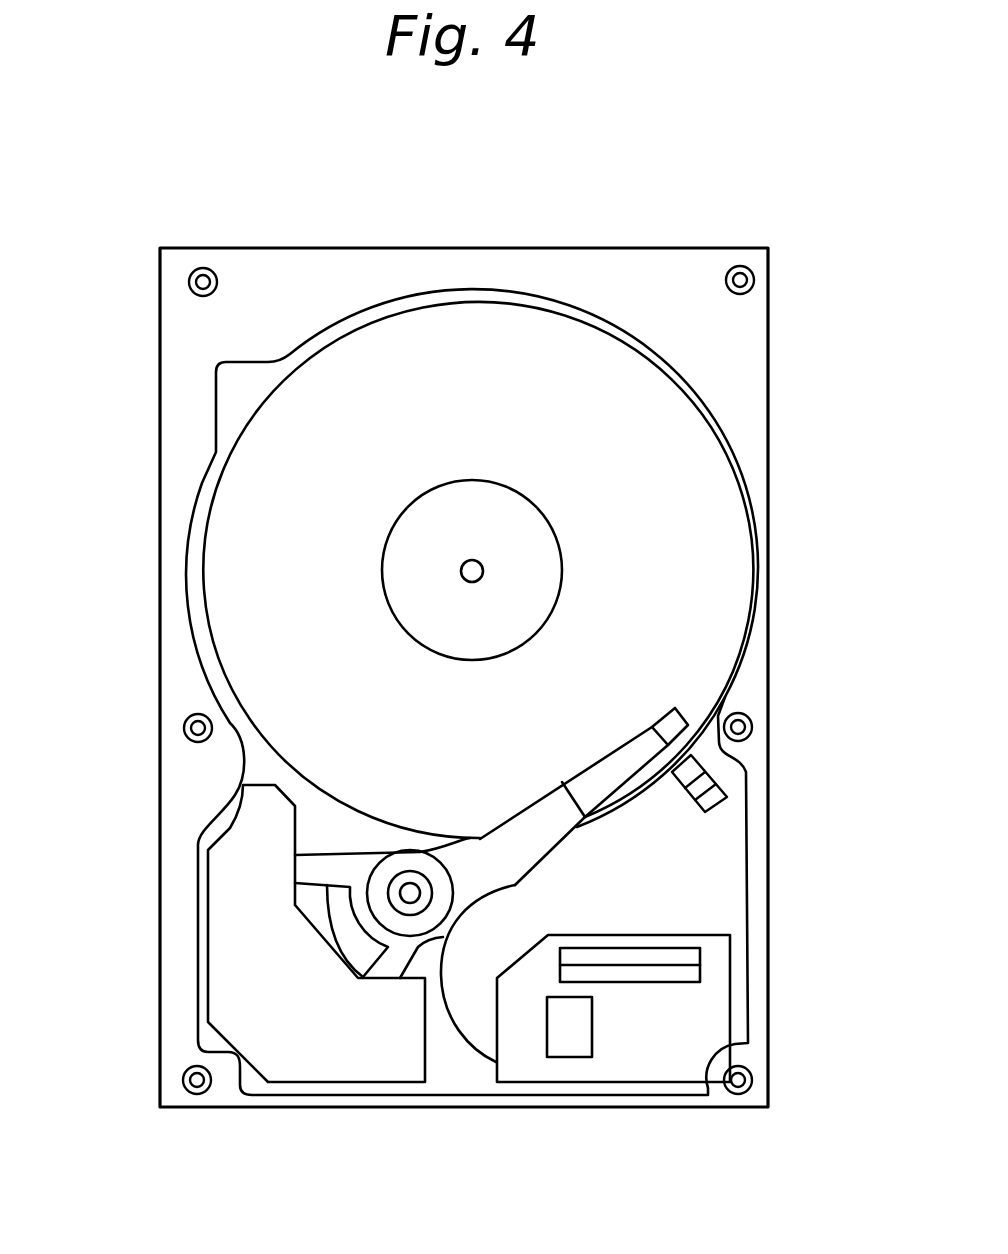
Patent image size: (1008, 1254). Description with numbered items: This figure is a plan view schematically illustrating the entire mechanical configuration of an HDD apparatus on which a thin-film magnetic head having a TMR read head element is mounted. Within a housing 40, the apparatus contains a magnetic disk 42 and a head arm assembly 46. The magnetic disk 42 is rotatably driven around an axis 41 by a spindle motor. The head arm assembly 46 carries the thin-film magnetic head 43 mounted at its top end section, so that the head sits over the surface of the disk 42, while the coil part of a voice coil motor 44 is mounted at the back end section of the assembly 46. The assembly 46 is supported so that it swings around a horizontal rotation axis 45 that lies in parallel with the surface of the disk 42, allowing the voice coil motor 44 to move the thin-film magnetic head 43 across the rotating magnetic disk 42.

The housing 40 is at (637, 282).
The axis 41 is at (477, 565).
The magnetic disk 42 is at (712, 572).
The thin-film magnetic head 43 is at (668, 722).
The voice coil motor 44 is at (263, 990).
The horizontal rotation axis 45 is at (414, 893).
The head arm assembly 46 is at (535, 823).